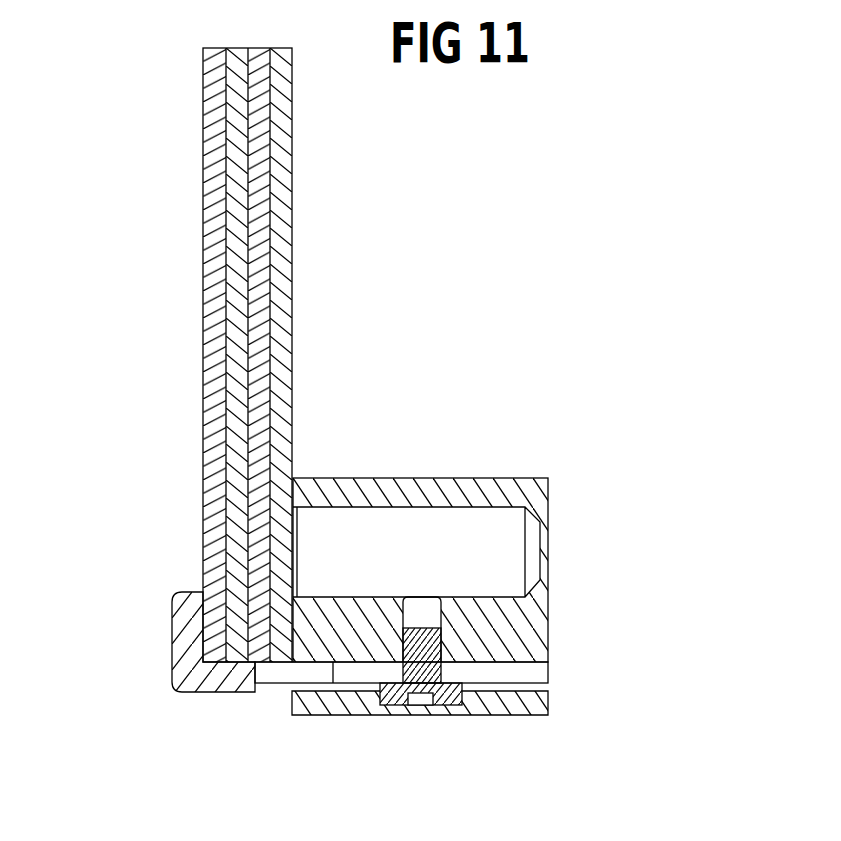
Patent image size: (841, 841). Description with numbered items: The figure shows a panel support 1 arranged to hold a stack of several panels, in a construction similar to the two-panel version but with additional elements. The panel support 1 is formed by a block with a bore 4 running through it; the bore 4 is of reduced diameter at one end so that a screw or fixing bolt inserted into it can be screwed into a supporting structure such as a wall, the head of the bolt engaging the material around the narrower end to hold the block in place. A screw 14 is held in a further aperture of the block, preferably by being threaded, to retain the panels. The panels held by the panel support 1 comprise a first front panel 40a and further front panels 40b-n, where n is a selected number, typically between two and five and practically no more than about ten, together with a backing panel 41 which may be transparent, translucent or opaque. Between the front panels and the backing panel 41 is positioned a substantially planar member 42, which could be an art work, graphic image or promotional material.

The panel support 1 is at (503, 490).
The bore 4 is at (372, 548).
The screw 14 is at (448, 692).
The first front panel 40a is at (237, 384).
The further front panels 40b-n is at (213, 299).
The backing panel 41 is at (293, 288).
The substantially planar member 42 is at (263, 383).